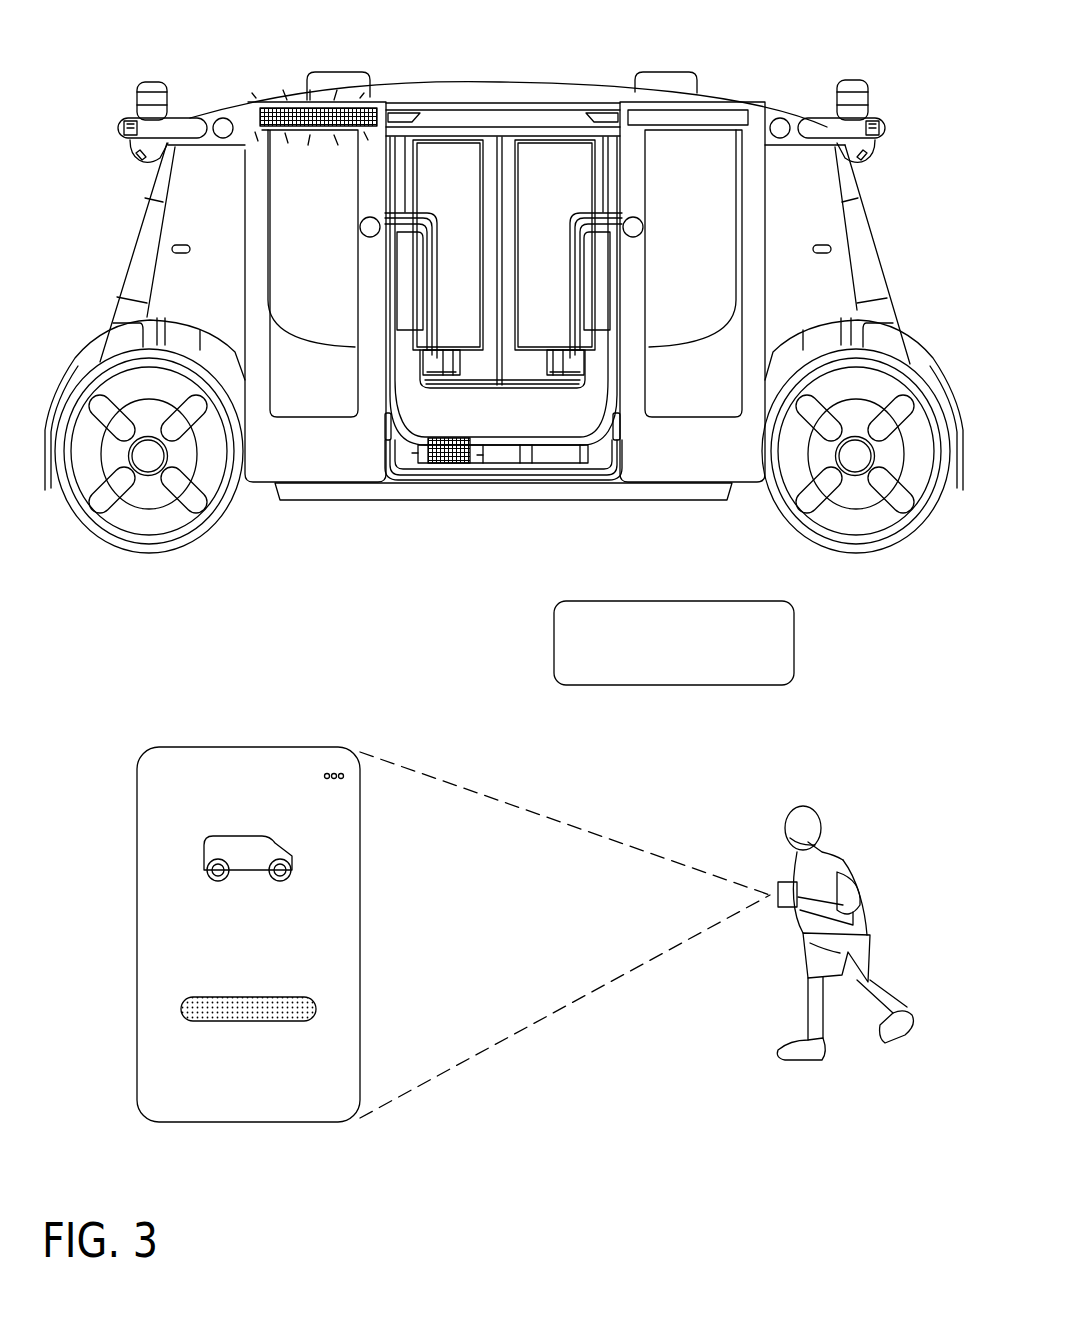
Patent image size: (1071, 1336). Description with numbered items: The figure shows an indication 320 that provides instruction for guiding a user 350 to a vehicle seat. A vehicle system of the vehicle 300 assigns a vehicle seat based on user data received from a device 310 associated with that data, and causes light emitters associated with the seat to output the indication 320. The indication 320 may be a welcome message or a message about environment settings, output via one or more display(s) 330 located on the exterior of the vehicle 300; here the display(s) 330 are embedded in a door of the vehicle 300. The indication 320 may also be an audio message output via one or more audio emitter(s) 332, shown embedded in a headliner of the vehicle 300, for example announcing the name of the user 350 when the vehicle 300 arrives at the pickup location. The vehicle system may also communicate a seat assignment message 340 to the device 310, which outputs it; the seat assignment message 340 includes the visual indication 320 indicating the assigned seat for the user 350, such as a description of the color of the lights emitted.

The vehicle 300 is at (592, 100).
The device 310 is at (257, 760).
The indication 320 is at (339, 957).
The display(s) 330 is at (631, 225).
The audio emitter(s) 332 is at (822, 62).
The seat assignment message 340 is at (785, 880).
The user 350 is at (842, 850).